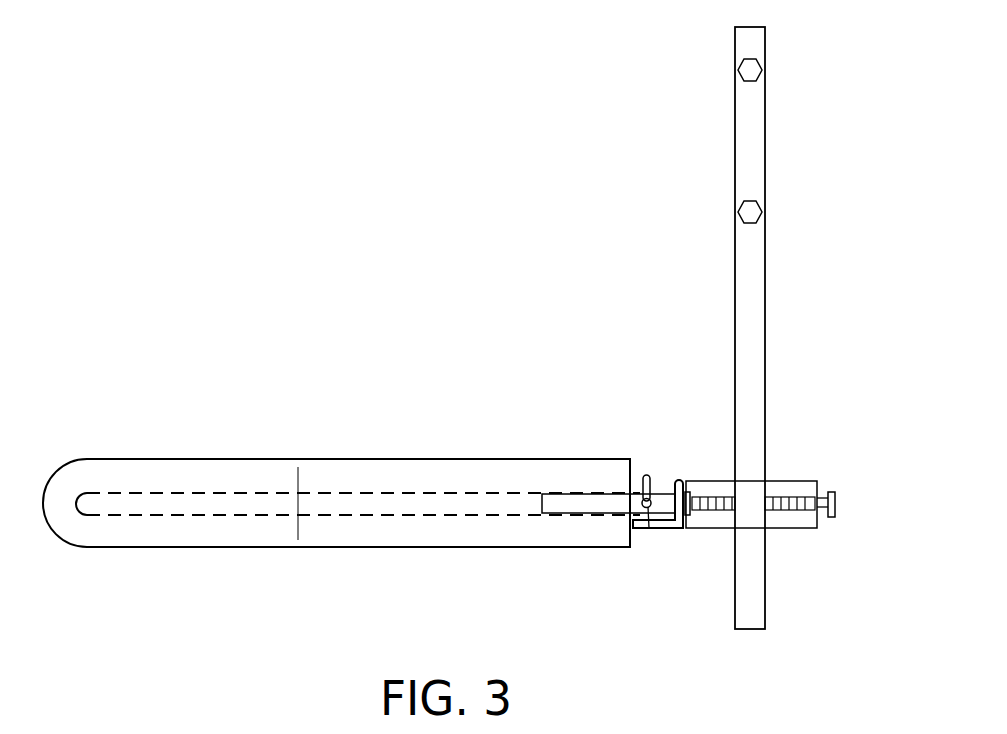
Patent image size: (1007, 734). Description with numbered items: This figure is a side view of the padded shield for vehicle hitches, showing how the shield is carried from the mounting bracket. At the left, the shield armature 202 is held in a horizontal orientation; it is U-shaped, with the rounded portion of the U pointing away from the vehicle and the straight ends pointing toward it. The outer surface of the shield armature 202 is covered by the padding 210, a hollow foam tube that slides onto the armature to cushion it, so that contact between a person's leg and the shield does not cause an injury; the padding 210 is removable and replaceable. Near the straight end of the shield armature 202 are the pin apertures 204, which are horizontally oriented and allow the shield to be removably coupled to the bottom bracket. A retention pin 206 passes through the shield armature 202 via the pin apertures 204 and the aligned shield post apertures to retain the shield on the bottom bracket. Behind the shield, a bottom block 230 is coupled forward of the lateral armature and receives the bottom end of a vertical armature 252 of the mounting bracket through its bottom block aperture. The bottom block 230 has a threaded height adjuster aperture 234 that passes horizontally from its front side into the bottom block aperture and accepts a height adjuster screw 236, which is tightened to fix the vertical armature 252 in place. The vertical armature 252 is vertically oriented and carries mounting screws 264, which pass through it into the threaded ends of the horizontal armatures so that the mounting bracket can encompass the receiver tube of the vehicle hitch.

The padding 210 is at (87, 458).
The shield armature 202 is at (158, 516).
The retention pins 206 is at (647, 475).
The pin apertures 204 is at (649, 528).
The bottom blocks 230 is at (793, 480).
The height adjuster aperture 234 is at (793, 512).
The height adjuster screw 236 is at (836, 505).
The vertical armatures 252 is at (755, 302).
The mounting screws 264 is at (752, 72).